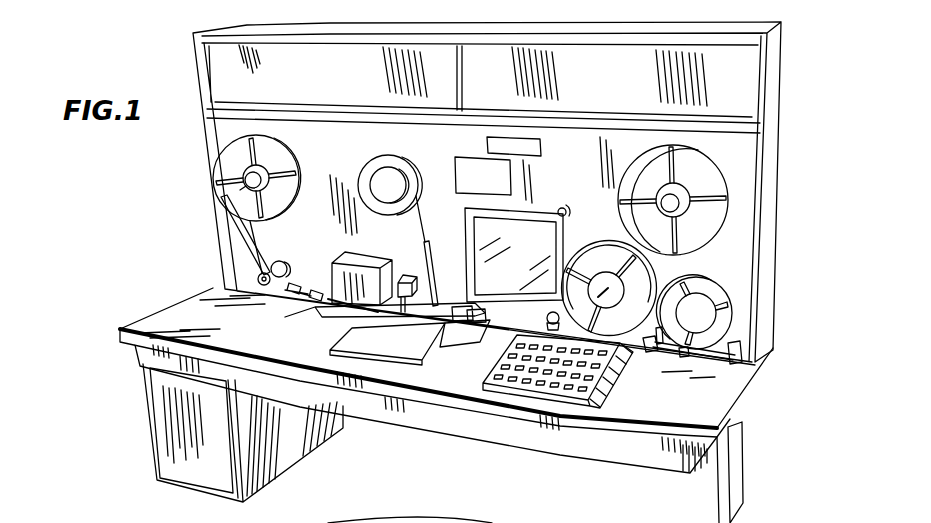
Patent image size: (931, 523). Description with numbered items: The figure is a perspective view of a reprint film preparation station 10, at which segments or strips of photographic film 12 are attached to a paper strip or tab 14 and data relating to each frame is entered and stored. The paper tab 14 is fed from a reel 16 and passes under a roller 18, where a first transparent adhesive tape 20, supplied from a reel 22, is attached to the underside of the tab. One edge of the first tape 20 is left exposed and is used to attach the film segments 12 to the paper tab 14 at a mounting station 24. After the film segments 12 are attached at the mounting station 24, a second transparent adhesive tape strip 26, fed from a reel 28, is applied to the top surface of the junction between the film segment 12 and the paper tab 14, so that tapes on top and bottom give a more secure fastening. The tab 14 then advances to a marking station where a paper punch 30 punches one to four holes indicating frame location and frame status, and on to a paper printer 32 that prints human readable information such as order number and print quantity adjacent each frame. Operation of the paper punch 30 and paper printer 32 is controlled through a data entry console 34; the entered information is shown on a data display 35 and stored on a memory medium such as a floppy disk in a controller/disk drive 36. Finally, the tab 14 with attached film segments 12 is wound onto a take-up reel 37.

The reprint film preparation station 10 is at (803, 208).
The photographic film segment 12 is at (251, 259).
The paper tab 14 is at (244, 263).
The reel 16 is at (590, 253).
The roller 18 is at (650, 357).
The first transparent adhesive tape 20 is at (684, 357).
The reel 22 is at (729, 318).
The mounting station 24 is at (471, 331).
The second transparent adhesive tape strip 26 is at (427, 242).
The reel 28 is at (417, 167).
The paper punch 30 is at (350, 323).
The paper printer 32 is at (322, 293).
The data entry console 34 is at (540, 384).
The data display 35 is at (531, 229).
The controller/disk drive 36 is at (547, 146).
The take-up reel 37 is at (303, 159).